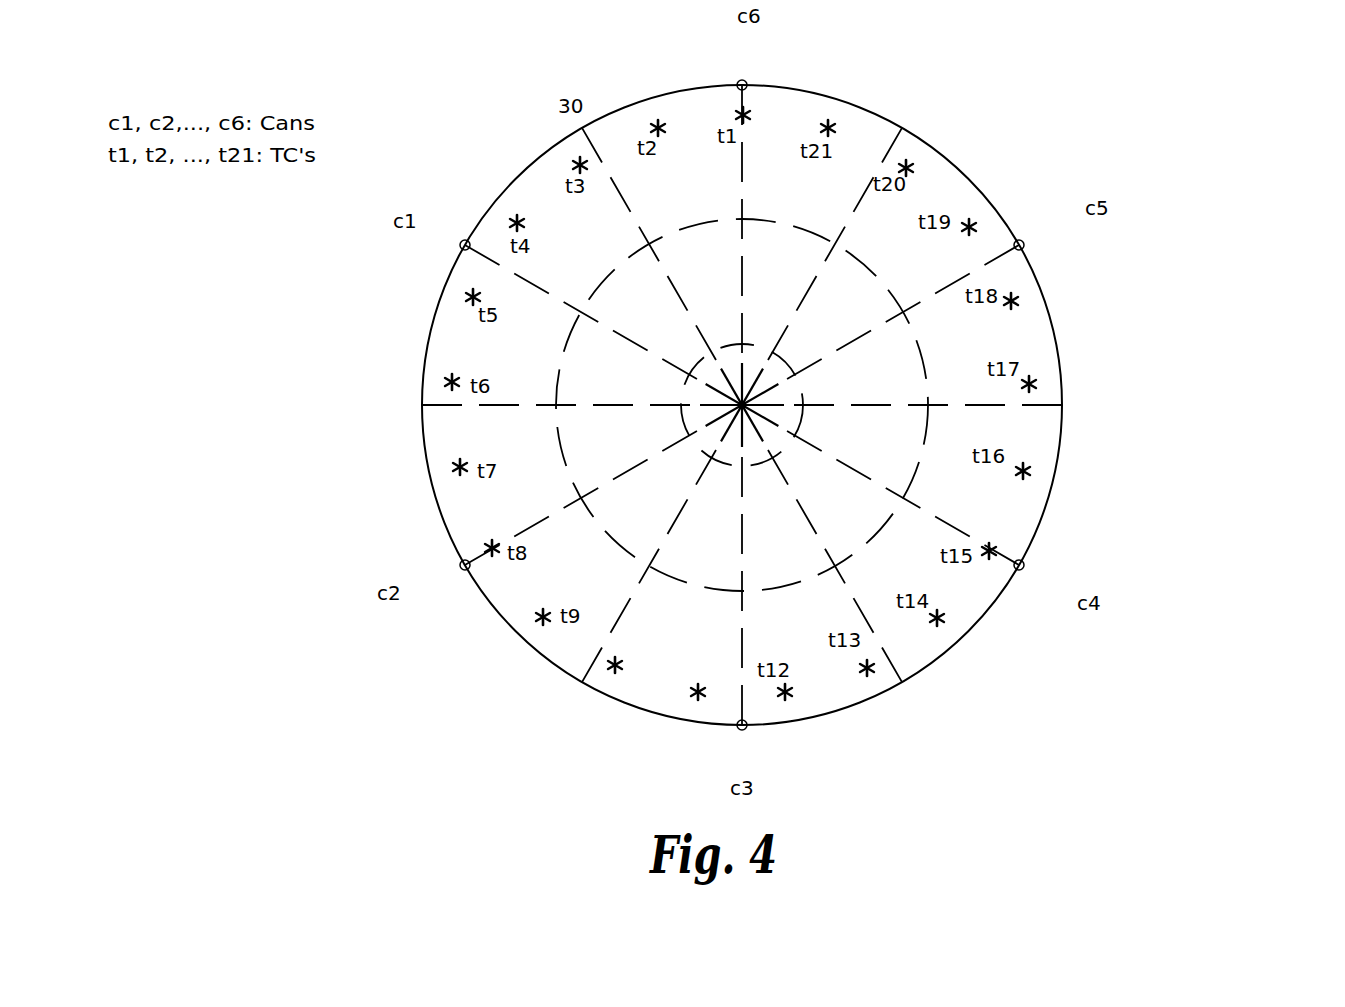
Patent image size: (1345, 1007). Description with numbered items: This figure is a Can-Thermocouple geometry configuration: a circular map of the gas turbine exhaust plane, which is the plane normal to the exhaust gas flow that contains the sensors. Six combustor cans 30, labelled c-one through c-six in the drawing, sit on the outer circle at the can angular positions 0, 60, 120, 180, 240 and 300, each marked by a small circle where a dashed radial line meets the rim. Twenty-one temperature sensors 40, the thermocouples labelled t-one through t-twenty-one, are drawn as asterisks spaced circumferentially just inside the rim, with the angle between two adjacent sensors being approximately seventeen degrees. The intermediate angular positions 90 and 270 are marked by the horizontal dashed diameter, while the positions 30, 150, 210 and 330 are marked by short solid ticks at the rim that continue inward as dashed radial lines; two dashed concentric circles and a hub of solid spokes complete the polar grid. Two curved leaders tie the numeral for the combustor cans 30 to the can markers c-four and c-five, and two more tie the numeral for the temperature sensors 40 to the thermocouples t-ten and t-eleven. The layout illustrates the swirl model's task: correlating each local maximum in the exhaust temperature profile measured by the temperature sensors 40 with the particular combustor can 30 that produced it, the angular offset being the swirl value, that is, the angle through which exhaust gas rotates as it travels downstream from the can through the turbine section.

The combustor cans 30 is at (1112, 205).
The temperature sensors 40 is at (688, 690).
The 0 degree angular position 0 is at (743, 199).
The 60 degree angular position 60 is at (723, 304).
The 90 degree angular position 90 is at (723, 401).
The 120 degree angular position 120 is at (716, 510).
The 150 degree angular position 150 is at (726, 583).
The 180 degree angular position 180 is at (744, 612).
The 210 degree angular position 210 is at (760, 589).
The 240 degree angular position 240 is at (766, 514).
The 270 degree angular position 270 is at (772, 409).
The 300 degree angular position 300 is at (769, 295).
The 330 degree angular position 330 is at (770, 226).